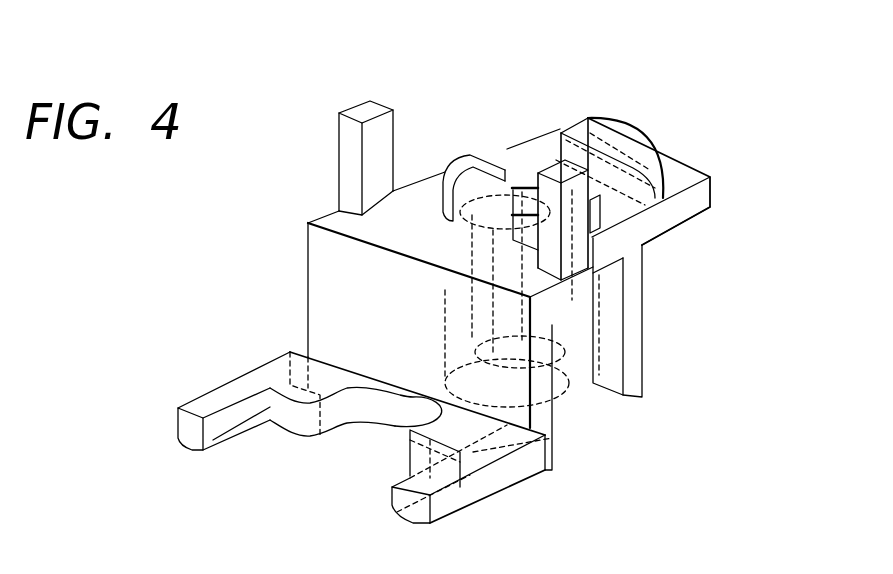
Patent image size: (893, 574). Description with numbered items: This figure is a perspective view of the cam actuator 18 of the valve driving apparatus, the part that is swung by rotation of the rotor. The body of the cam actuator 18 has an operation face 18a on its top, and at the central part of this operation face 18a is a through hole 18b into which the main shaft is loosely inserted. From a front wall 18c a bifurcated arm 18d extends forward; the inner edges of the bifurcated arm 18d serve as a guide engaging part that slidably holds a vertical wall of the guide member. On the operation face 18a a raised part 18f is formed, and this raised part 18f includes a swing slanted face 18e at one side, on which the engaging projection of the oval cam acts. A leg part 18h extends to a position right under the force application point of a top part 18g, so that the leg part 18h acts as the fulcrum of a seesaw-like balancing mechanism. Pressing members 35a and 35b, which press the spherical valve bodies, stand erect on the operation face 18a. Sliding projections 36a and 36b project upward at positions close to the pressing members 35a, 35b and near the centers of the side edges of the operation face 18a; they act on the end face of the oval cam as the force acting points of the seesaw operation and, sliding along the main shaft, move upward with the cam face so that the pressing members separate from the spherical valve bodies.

The cam actuator 18 is at (465, 276).
The operation face 18a is at (428, 210).
The through hole 18b is at (523, 188).
The front wall 18c is at (342, 315).
The bifurcated arm 18d is at (196, 402).
The swing slanted face 18e is at (630, 173).
The raised part 18f is at (637, 143).
The top part 18g is at (563, 168).
The leg part 18h is at (638, 398).
The pressing member 35a is at (352, 108).
The pressing member 35b is at (660, 170).
The sliding projection 36a is at (453, 153).
The sliding projection 36b is at (687, 227).